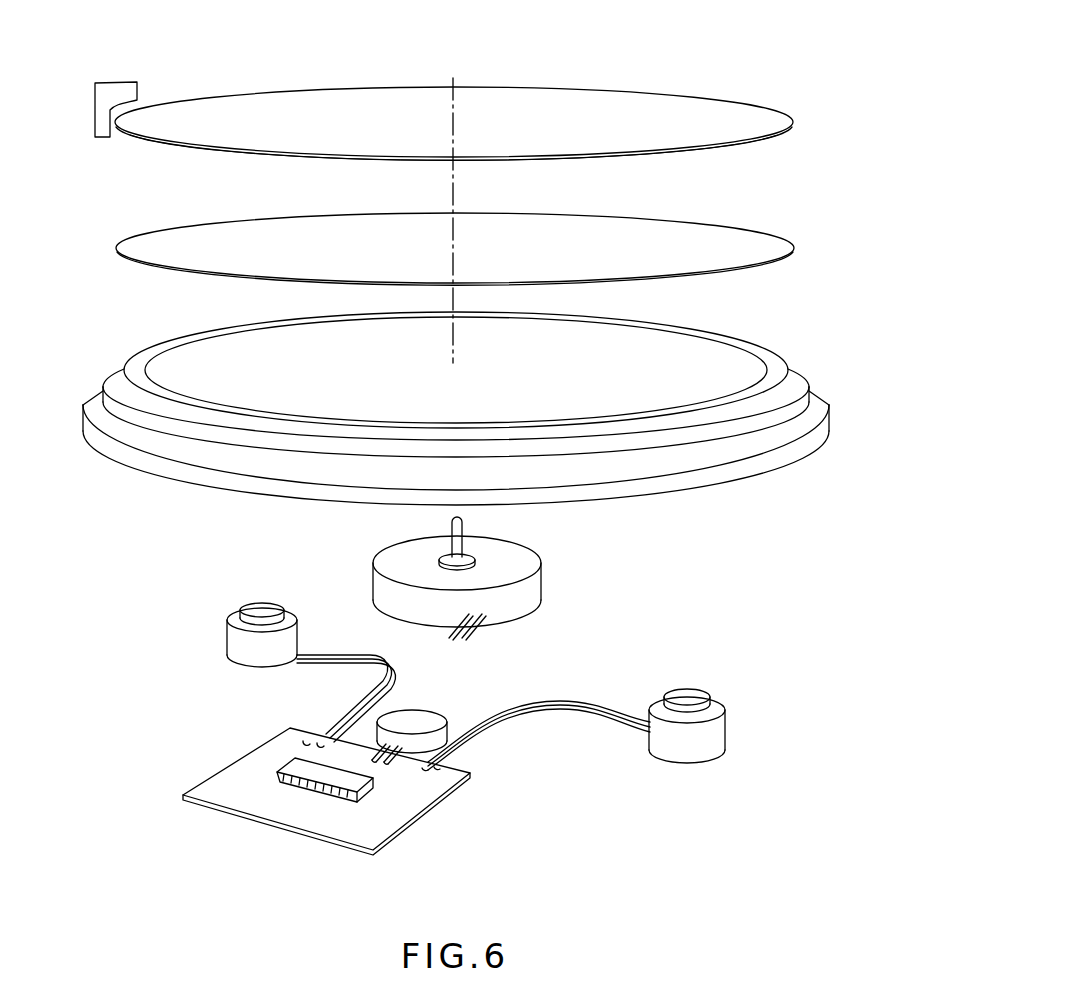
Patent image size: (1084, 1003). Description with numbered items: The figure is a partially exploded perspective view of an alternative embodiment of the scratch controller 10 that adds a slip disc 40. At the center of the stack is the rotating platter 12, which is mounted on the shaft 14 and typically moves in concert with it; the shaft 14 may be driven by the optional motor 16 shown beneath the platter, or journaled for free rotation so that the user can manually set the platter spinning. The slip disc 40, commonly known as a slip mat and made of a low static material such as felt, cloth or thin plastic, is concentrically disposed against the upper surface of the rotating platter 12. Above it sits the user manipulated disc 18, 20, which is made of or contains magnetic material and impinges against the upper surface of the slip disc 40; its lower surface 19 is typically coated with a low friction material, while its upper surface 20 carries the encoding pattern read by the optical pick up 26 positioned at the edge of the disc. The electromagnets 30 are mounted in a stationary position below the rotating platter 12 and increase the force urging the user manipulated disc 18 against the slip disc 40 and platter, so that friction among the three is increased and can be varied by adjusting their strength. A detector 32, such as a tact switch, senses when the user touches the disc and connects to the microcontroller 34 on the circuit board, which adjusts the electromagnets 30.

The scratch controller 10 is at (880, 305).
The rotating platter 12 is at (828, 393).
The shaft 14 is at (460, 522).
The motor 16 is at (542, 578).
The user manipulated disc 18 is at (793, 127).
The lower surface 19 is at (748, 157).
The upper surface 20 is at (493, 134).
The optical pick up 26 is at (113, 84).
The electromagnets 30 is at (225, 650).
The detector 32 is at (450, 708).
The microcontroller 34 is at (372, 787).
The slip disc 40 is at (718, 275).